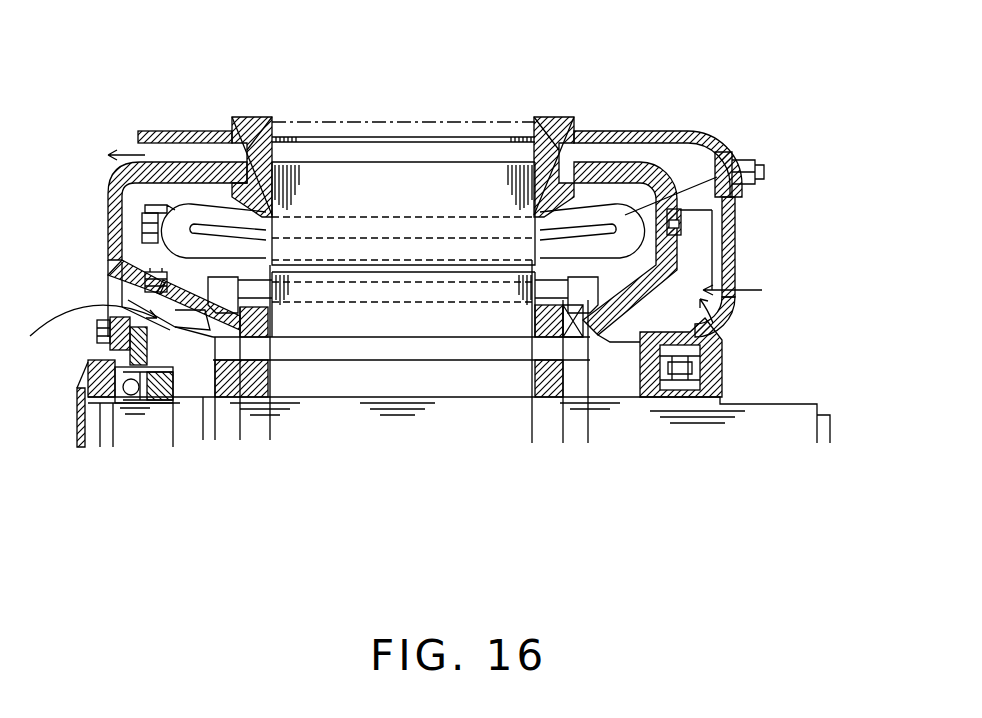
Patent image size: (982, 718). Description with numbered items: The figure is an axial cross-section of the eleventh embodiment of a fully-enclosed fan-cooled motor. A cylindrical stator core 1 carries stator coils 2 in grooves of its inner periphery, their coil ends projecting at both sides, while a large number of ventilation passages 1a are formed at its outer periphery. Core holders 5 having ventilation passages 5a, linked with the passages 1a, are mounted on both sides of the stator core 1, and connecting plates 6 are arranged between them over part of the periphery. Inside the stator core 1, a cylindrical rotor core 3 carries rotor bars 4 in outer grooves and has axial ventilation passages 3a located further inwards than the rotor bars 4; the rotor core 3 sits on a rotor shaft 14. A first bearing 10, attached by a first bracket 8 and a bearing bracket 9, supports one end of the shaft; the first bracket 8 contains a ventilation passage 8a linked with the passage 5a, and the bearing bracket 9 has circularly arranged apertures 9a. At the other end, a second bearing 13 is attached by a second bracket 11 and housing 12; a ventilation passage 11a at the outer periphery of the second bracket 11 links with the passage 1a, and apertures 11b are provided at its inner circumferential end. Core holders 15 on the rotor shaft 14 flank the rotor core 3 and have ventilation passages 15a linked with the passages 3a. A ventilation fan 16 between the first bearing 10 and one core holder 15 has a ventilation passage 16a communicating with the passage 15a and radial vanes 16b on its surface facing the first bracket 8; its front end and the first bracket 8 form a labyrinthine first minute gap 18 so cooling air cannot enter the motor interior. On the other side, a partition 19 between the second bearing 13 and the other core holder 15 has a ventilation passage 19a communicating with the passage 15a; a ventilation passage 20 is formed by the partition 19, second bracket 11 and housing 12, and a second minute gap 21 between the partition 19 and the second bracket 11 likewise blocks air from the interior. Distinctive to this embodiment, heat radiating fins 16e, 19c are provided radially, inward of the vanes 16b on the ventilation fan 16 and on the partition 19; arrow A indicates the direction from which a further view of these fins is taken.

The stator core 1 is at (400, 175).
The ventilation passages 1a is at (357, 150).
The stator coils 2 is at (720, 157).
The rotor core 3 is at (470, 323).
The ventilation passages 3a is at (443, 348).
The rotor bars 4 is at (368, 293).
The core holders 5 is at (255, 147).
The ventilation passages 5a is at (265, 140).
The connecting plates 6 is at (473, 120).
The first bracket 8 is at (653, 133).
The ventilation passage 8a is at (603, 150).
The bearing bracket 9 is at (735, 263).
The apertures 9a is at (725, 302).
The first bearing 10 is at (677, 400).
The second bracket 11 is at (108, 195).
The ventilation passage 11a is at (182, 150).
The apertures 11b is at (110, 293).
The housing 12 is at (108, 345).
The second bearing 13 is at (85, 385).
The rotor shaft 14 is at (345, 420).
The core holders 15 is at (535, 400).
The ventilation passages 15a is at (518, 400).
The ventilation fan 16 is at (603, 312).
The ventilation passage 16a is at (577, 400).
The radial vanes 16b is at (730, 233).
The heat radiating fins 16e is at (640, 380).
The first minute gap 18 is at (765, 168).
The partition 19 is at (200, 400).
The ventilation passage 19a is at (240, 400).
The heat radiating fins 19c is at (172, 440).
The ventilation passage 20 is at (143, 400).
The second minute gap 21 is at (110, 258).
The arrow A is at (742, 291).